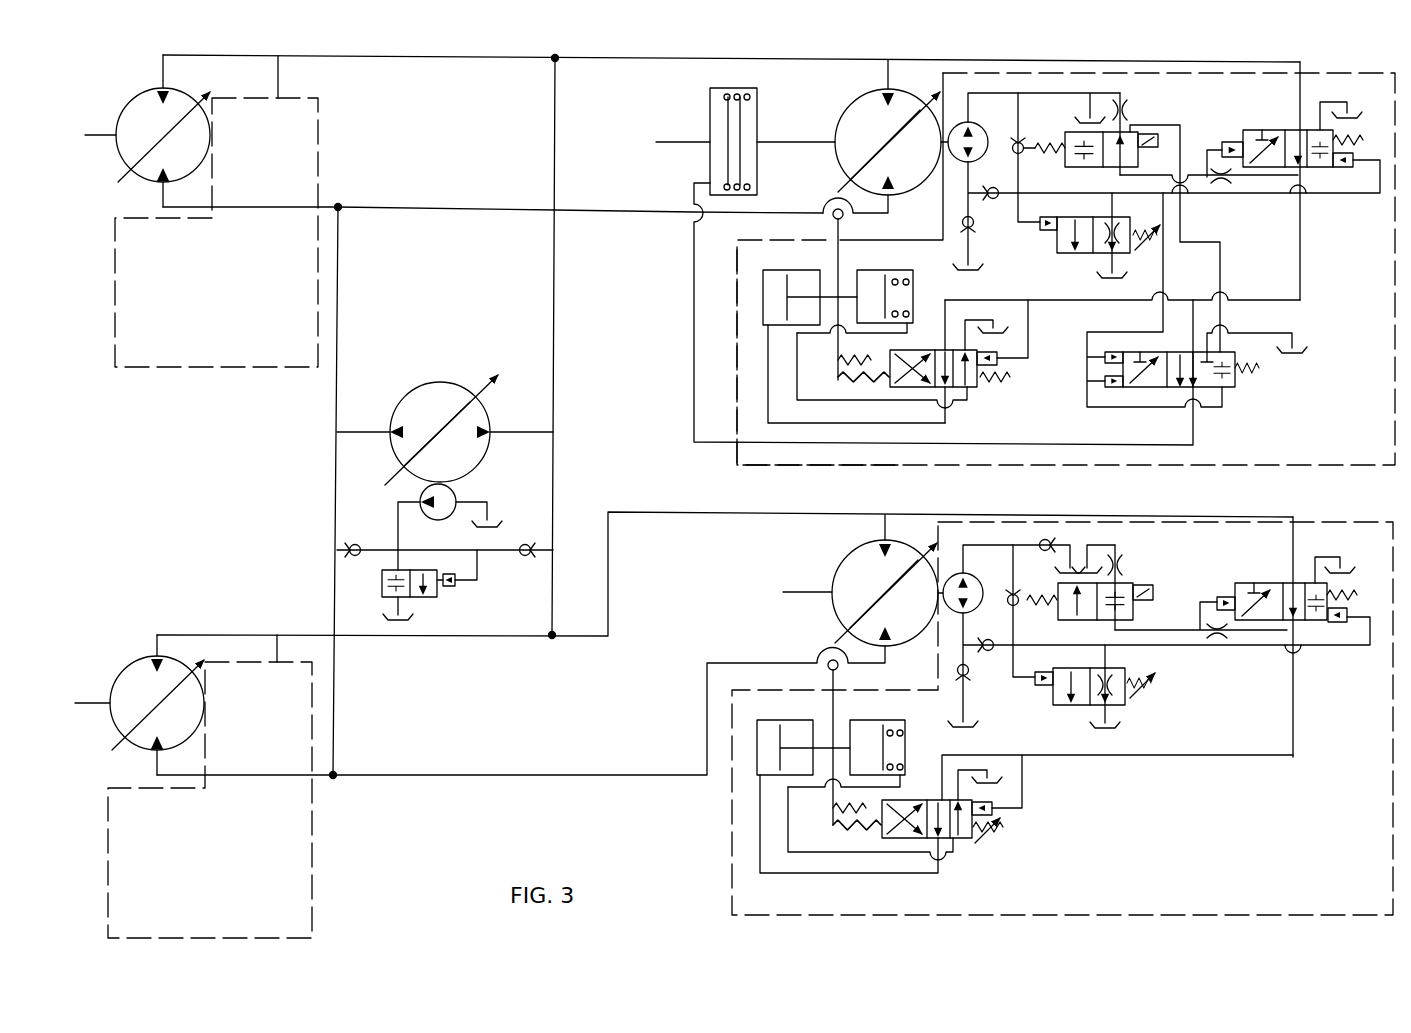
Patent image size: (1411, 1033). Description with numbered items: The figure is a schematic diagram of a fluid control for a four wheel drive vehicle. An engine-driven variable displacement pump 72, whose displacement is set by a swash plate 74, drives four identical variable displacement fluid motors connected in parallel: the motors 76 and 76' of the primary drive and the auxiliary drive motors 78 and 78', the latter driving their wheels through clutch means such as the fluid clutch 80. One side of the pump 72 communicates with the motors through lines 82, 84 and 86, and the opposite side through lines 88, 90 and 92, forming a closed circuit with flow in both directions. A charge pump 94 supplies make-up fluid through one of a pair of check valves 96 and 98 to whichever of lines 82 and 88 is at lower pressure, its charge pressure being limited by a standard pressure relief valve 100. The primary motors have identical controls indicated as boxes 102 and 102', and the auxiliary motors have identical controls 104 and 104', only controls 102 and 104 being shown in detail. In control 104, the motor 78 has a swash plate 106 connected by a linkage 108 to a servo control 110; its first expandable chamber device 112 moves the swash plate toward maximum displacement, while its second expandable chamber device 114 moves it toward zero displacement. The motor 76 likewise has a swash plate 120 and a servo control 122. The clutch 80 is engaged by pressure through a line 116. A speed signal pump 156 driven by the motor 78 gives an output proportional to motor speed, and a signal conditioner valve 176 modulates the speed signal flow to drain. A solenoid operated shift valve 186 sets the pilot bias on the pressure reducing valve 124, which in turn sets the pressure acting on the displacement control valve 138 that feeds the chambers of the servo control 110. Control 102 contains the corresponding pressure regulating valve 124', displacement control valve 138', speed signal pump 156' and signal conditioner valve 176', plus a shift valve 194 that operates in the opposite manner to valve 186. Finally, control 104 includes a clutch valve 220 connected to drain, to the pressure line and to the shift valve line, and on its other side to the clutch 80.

The variable displacement pump 72 is at (465, 388).
The swash plate 74 is at (455, 412).
The motor 76 is at (832, 580).
The motor 76' is at (138, 689).
The auxiliary drive motor 78 is at (867, 136).
The auxiliary drive motor 78' is at (139, 131).
The clutch means 80 is at (710, 117).
The line 82 is at (553, 342).
The line 84 is at (735, 512).
The line 86 is at (695, 58).
The line 88 is at (335, 375).
The line 90 is at (458, 775).
The line 92 is at (423, 210).
The charge pump 94 is at (460, 500).
The check valve 96 is at (525, 543).
The check valve 98 is at (345, 548).
The pressure relief valve 100 is at (452, 598).
The control 102 is at (1062, 718).
The control 102' is at (210, 786).
The control 104 is at (1066, 269).
The control 104' is at (216, 211).
The swash plate 106 is at (860, 165).
The linkage 108 is at (840, 250).
The servo control 110 is at (765, 258).
The first expandable chamber device 112 is at (950, 298).
The second expandable chamber device 114 is at (760, 307).
The line 116 is at (700, 448).
The swash plate 120 is at (900, 575).
The servo control 122 is at (765, 708).
The pressure reducing valve 124 is at (1285, 181).
The pressure regulating valve 124' is at (1287, 620).
The displacement control valve 138 is at (950, 365).
The displacement control valve 138' is at (1040, 776).
The pump 156 is at (1164, 150).
The speed signal pump 156' is at (1156, 597).
The signal conditioner valve 176 is at (1099, 249).
The signal conditioner valve 176' is at (1122, 694).
The solenoid operated shift valve 186 is at (1142, 107).
The solenoid operated shift valve 194 is at (1138, 560).
The clutch valve 220 is at (1205, 414).